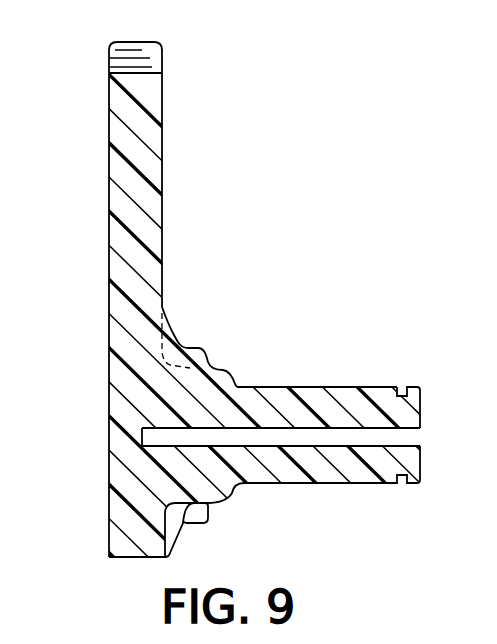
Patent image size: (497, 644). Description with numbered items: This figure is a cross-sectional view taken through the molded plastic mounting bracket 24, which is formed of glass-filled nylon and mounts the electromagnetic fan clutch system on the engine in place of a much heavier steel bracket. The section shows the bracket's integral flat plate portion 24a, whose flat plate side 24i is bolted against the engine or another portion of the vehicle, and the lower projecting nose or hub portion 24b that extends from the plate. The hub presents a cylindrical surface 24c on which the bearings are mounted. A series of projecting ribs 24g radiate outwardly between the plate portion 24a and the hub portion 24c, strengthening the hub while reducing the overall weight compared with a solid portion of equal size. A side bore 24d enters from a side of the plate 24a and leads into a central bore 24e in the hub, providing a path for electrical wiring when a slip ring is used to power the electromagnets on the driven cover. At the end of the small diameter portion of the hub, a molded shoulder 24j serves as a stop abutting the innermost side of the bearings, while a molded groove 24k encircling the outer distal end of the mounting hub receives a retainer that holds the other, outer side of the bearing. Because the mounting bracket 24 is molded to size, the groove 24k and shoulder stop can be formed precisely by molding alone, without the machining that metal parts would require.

The mounting bracket 24 is at (180, 186).
The flat plate portion 24a is at (162, 137).
The hub portion 24b is at (352, 483).
The cylindrical surface 24c is at (307, 388).
The side bore 24d is at (153, 433).
The central bore 24e is at (280, 437).
The projecting ribs 24g is at (173, 330).
The flat plate side 24i is at (108, 262).
The molded shoulder 24j is at (238, 385).
The molded groove 24k is at (403, 387).